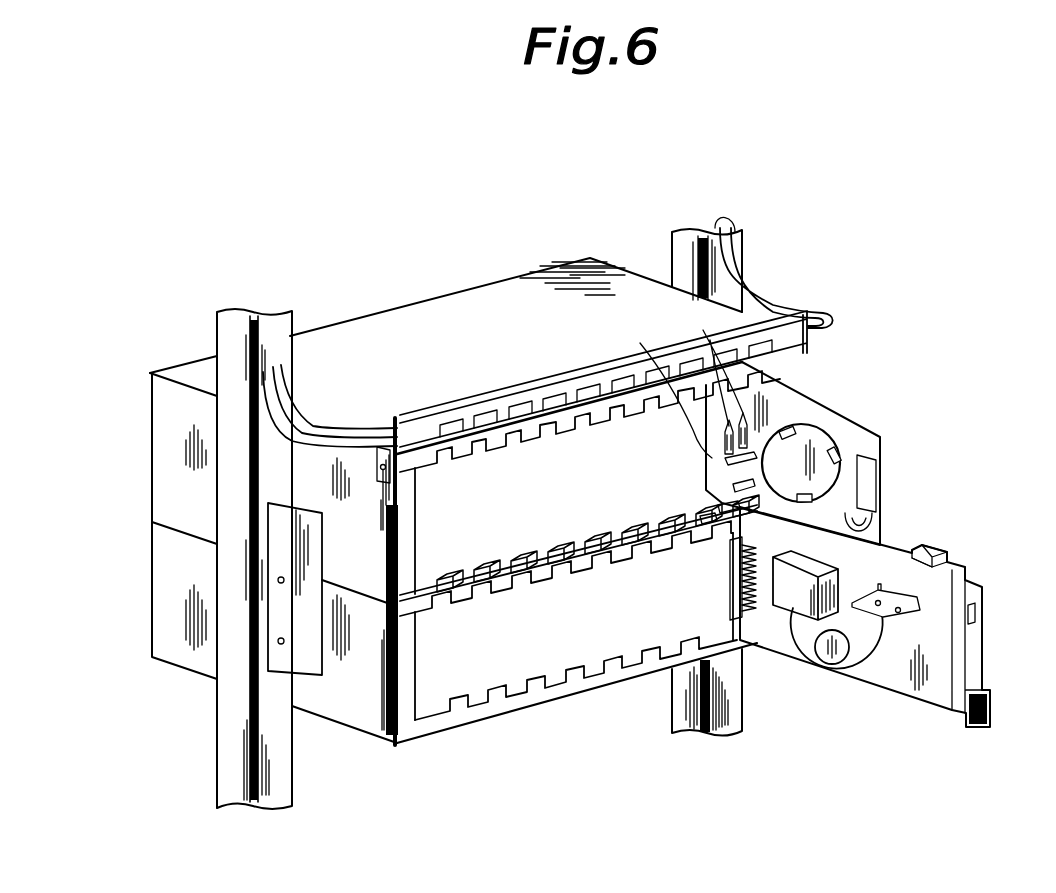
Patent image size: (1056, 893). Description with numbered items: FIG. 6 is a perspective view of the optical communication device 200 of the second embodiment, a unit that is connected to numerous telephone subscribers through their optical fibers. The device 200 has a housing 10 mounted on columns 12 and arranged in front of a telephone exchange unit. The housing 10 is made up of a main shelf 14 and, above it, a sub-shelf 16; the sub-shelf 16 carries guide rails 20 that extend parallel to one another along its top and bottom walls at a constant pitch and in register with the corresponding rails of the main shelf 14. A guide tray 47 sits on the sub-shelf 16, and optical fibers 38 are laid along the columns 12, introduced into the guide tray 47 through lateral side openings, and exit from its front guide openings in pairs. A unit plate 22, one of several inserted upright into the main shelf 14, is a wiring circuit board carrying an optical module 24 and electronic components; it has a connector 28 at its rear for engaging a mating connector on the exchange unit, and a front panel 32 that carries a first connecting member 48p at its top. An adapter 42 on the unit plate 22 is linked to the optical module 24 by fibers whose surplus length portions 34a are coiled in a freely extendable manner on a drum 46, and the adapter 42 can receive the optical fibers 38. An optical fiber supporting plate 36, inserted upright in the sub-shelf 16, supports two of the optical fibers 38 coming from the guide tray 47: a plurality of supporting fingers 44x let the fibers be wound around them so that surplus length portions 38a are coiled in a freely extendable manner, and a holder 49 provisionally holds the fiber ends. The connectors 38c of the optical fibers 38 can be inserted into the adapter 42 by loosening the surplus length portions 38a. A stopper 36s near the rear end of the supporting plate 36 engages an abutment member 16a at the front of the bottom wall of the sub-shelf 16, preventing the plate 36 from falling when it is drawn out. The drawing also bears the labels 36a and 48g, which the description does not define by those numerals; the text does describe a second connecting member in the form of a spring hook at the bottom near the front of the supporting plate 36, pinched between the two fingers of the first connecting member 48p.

The housing 10 is at (490, 305).
The columns 12 is at (270, 332).
The main shelf 14 is at (409, 728).
The sub-shelf 16 is at (388, 603).
The abutment member 16a is at (493, 580).
The guide rails 20 is at (433, 580).
The unit plate 22 is at (897, 680).
The optical module 24 is at (795, 598).
The connector 28 is at (733, 592).
The front panel 32 is at (968, 670).
The surplus length portions 34a is at (857, 673).
The optical fiber supporting plate 36 is at (882, 441).
The slot 36a is at (873, 477).
The stopper 36s is at (727, 490).
The optical fibers 38 is at (828, 405).
The surplus length portions 38a is at (868, 442).
The connectors 38c is at (701, 382).
The adapter 42 is at (880, 600).
The supporting fingers 44x is at (840, 447).
The drum 46 is at (828, 653).
The guide tray 47 is at (578, 375).
The hook 48g is at (853, 513).
The first connecting member 48p is at (947, 562).
The holder 49 is at (659, 394).
The optical communication device 200 is at (840, 264).